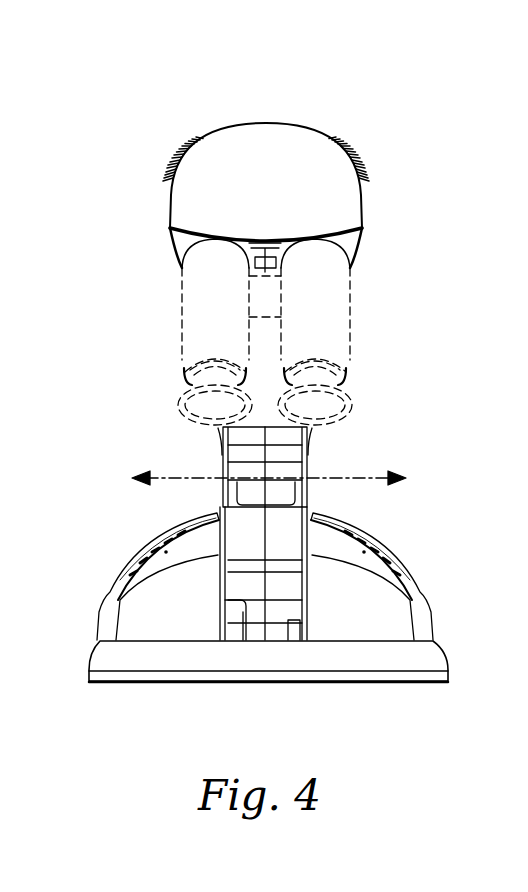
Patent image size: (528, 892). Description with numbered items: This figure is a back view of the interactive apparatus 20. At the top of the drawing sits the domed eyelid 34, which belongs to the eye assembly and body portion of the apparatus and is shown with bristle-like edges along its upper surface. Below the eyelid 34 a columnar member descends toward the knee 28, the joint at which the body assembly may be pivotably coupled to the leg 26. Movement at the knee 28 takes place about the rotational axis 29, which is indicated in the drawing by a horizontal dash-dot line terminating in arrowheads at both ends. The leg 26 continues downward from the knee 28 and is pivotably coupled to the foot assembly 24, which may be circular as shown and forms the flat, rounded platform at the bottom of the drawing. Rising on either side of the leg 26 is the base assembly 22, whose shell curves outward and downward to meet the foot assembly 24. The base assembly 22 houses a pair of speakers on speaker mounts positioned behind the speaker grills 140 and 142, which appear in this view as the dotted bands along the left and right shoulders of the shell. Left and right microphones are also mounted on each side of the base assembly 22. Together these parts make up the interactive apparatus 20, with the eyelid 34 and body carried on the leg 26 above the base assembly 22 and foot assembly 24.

The interactive apparatus 20 is at (350, 52).
The eyelid 34 is at (342, 198).
The knee 28 is at (228, 453).
The rotational axis 29 is at (377, 478).
The leg 26 is at (293, 538).
The base assembly 22 is at (283, 576).
The speaker grill 140 is at (140, 560).
The speaker grill 142 is at (385, 553).
The foot assembly 24 is at (438, 655).